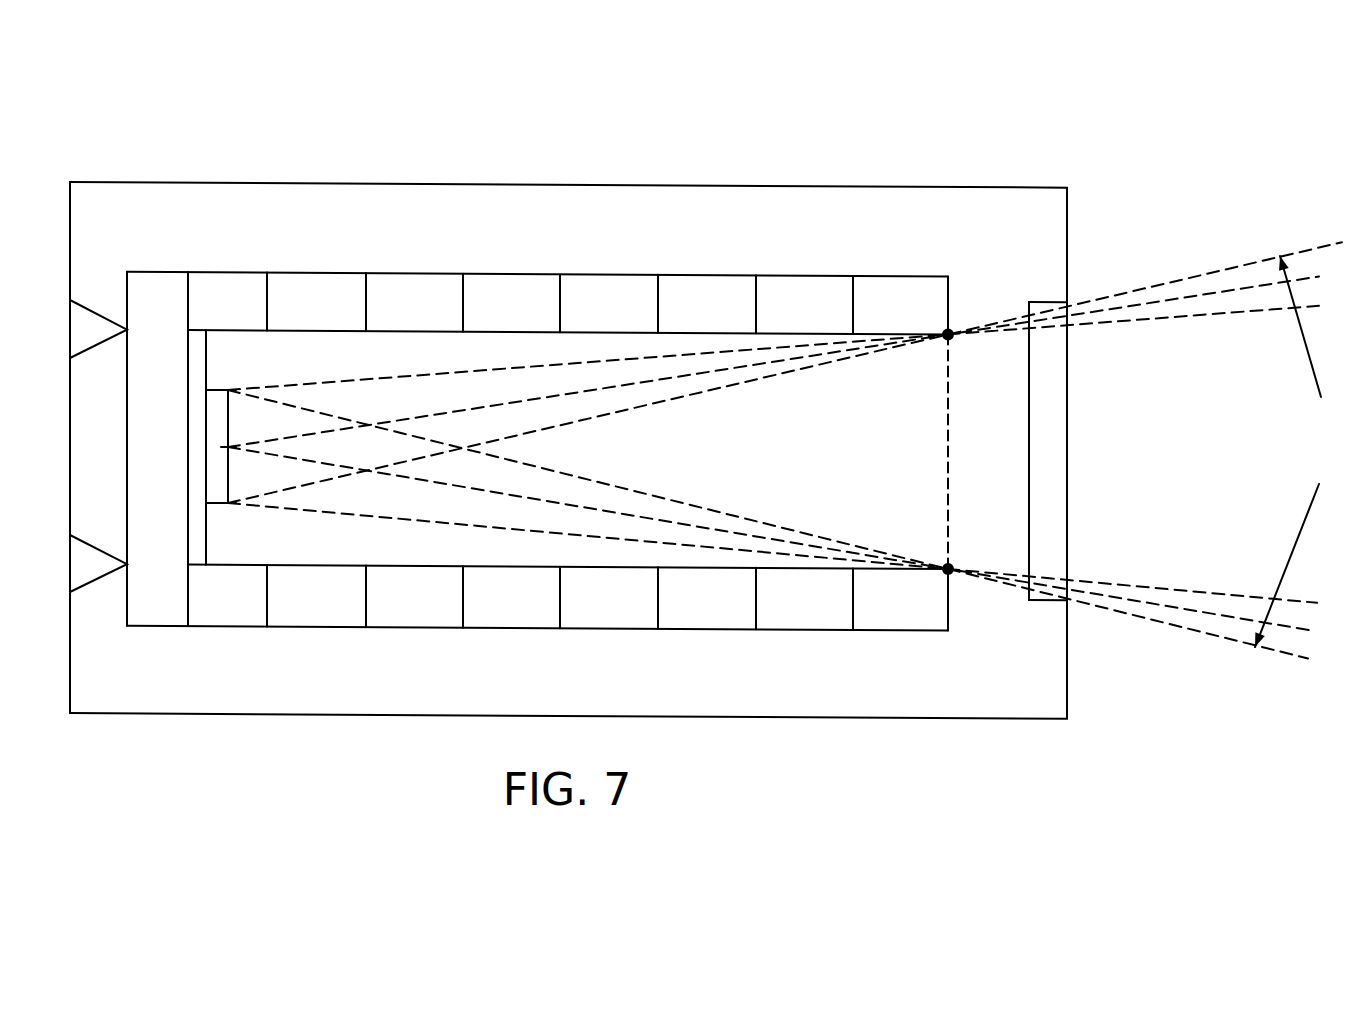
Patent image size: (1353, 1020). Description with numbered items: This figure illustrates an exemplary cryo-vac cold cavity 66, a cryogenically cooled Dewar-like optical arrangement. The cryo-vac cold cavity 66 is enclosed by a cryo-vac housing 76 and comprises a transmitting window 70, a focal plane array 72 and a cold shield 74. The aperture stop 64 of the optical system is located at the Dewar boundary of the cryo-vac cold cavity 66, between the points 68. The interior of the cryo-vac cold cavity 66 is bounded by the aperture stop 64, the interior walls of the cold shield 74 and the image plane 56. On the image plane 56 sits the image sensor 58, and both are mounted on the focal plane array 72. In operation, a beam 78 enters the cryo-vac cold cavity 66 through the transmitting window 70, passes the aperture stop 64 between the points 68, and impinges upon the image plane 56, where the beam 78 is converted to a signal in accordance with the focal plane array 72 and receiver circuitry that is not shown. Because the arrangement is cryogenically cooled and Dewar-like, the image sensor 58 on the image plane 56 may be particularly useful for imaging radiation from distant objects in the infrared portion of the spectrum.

The image plane 56 is at (218, 481).
The image sensor 58 is at (230, 428).
The aperture stop 64 is at (950, 452).
The cryo-vac cold cavity 66 is at (707, 387).
The points 68 is at (949, 328).
The transmitting window 70 is at (1058, 532).
The focal plane array 72 is at (197, 342).
The cold shield 74 is at (523, 590).
The cryo-vac housing 76 is at (613, 194).
The beam 78 is at (1299, 452).